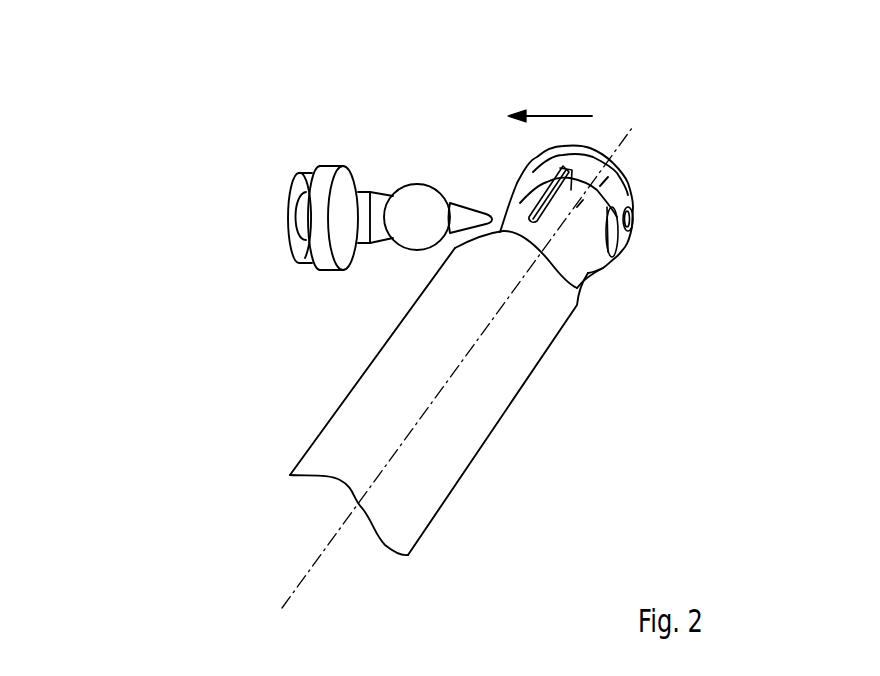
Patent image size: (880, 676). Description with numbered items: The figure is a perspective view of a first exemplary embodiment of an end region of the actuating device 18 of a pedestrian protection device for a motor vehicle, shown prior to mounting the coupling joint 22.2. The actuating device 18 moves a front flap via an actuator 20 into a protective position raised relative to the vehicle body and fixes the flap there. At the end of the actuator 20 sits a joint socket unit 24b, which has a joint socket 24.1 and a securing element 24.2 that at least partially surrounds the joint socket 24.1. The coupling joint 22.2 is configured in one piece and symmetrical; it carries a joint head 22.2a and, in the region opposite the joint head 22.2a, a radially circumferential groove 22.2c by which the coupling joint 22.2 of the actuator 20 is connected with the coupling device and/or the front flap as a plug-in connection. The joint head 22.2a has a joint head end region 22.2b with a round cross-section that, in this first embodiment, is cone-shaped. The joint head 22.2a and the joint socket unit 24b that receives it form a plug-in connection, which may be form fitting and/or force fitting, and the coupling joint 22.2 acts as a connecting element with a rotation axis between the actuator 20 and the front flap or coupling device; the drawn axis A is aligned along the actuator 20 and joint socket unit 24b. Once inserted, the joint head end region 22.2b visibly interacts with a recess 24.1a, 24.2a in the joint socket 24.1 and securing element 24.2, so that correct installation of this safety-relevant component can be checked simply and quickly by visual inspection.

The actuating device 18 is at (247, 190).
The actuator 20 is at (487, 393).
The coupling joint 22.2 is at (330, 168).
The joint head 22.2a is at (417, 192).
The joint head end region 22.2b is at (464, 208).
The groove 22.2c is at (293, 235).
The joint socket 24.1 is at (605, 268).
The securing element 24.2 is at (628, 185).
The recess 24.1a is at (633, 217).
The recess 24.2a is at (657, 223).
The joint socket unit 24b is at (638, 145).
The longitudinal axis A is at (324, 557).